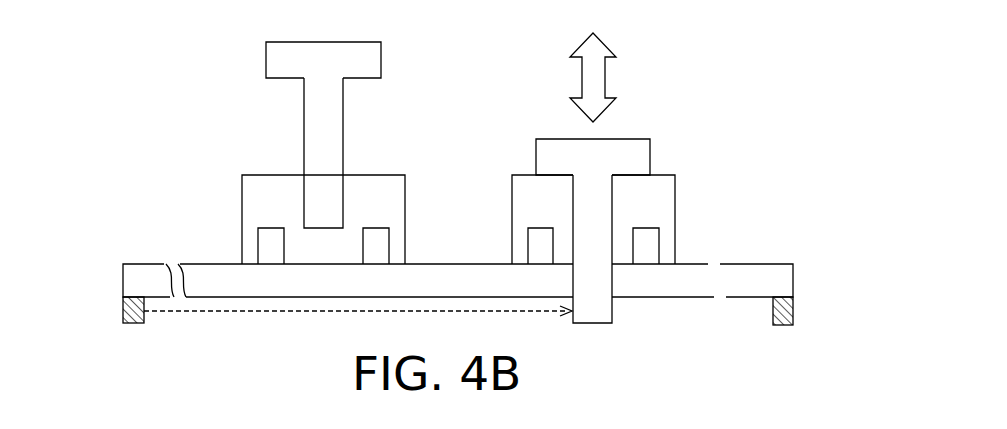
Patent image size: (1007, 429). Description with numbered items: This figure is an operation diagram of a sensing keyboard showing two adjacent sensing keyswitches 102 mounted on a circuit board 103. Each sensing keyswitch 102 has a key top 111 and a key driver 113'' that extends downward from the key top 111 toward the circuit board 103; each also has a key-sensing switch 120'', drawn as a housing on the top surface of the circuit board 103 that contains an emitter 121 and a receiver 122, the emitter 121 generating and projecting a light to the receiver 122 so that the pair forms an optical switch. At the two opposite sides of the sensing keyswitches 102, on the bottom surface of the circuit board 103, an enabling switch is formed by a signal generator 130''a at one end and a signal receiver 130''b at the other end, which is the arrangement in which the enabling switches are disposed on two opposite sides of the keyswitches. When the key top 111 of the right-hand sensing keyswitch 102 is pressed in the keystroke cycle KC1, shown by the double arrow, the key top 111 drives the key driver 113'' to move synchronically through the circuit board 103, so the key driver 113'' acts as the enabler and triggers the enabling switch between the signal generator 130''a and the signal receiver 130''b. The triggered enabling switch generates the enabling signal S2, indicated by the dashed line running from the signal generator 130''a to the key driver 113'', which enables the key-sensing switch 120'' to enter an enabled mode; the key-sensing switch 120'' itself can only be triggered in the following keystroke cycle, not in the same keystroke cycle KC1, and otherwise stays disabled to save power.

The sensing keyswitch 102 is at (497, 163).
The key top 111 is at (323, 65).
The key driver 113'' is at (525, 200).
The key-sensing switch 120'' is at (497, 219).
The emitter 121 is at (540, 254).
The receiver 122 is at (650, 253).
The circuit board 103 is at (778, 278).
The signal generator 130''a is at (94, 271).
The signal receiver 130''b is at (823, 273).
The keystroke cycle KC1 is at (593, 63).
The enabling signal S2 is at (515, 312).